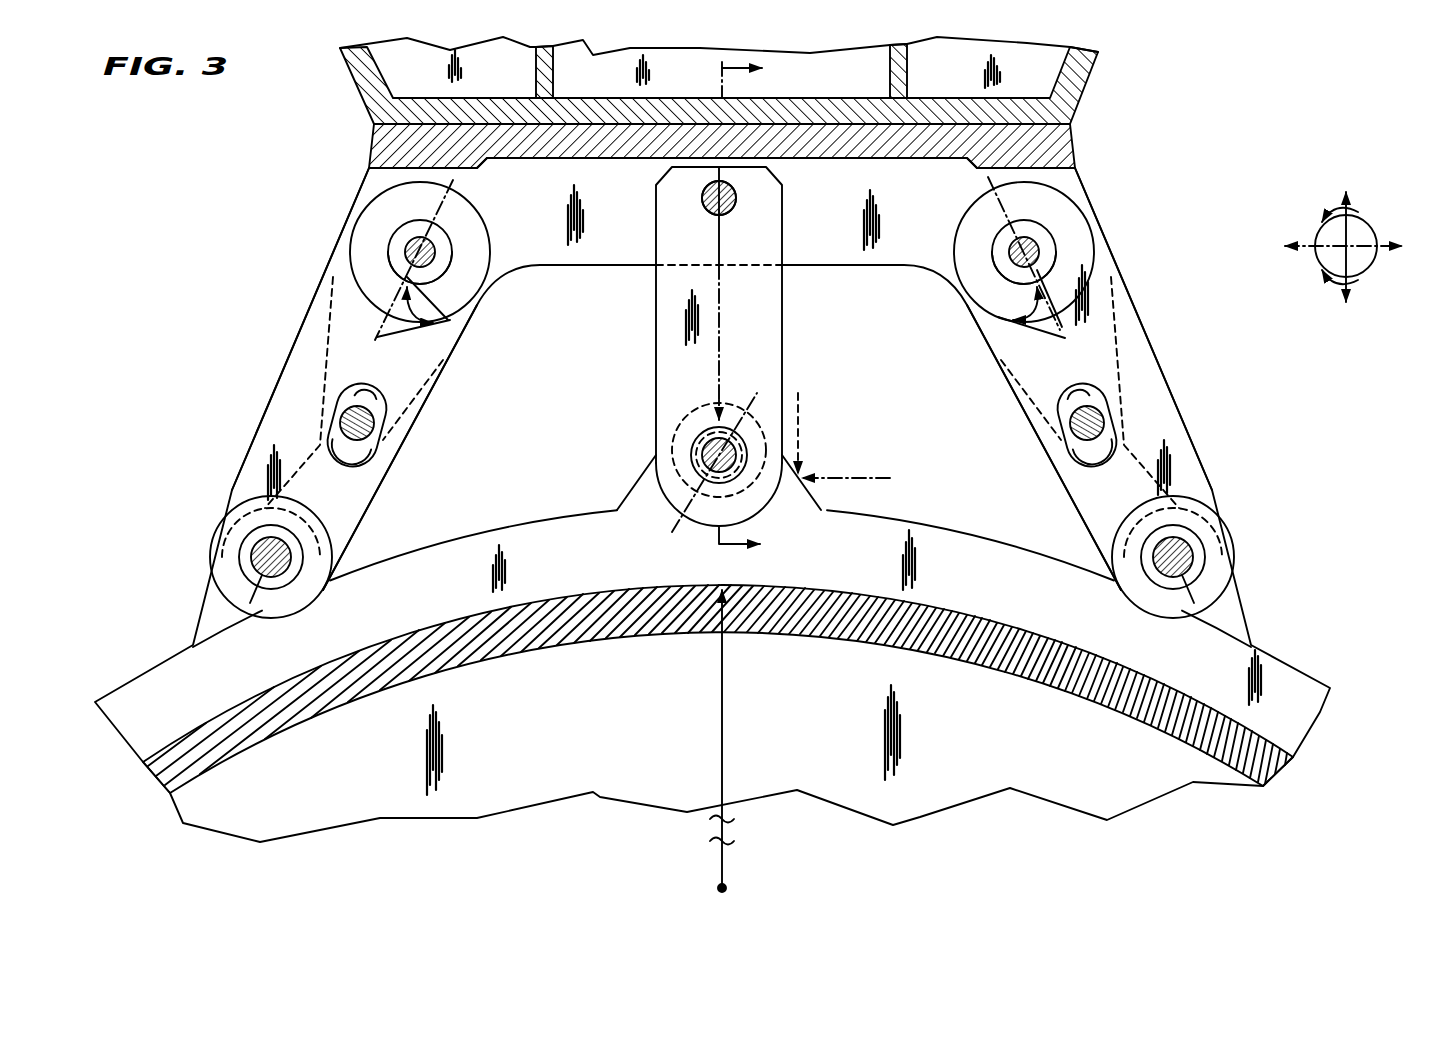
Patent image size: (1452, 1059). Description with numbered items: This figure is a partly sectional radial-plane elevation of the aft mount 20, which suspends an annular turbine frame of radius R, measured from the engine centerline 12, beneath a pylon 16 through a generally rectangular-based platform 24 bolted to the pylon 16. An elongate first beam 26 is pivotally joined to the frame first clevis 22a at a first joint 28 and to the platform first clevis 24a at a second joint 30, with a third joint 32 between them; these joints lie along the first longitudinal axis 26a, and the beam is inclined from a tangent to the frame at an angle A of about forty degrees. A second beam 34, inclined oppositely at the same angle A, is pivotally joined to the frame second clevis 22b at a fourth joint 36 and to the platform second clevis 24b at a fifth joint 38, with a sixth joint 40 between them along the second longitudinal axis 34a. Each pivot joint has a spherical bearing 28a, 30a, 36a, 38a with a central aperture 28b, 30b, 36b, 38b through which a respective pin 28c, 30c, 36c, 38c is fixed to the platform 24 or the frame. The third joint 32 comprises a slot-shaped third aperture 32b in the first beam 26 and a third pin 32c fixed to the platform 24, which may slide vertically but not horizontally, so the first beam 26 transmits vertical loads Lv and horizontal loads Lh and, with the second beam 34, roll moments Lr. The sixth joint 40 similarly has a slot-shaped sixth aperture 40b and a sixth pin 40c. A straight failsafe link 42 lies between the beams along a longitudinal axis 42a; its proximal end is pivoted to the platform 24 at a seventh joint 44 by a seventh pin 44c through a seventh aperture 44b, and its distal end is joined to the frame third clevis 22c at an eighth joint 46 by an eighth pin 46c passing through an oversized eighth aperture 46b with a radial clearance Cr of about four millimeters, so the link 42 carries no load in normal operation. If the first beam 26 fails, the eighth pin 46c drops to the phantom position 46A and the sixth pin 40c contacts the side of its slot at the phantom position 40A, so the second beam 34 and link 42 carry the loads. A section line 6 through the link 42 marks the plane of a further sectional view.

The engine centerline 12 is at (727, 890).
The pylon 16 is at (1085, 92).
The aft mount 20 is at (1168, 152).
The frame first clevis 22a is at (1241, 603).
The frame second clevis 22b is at (203, 603).
The frame third clevis 22c is at (620, 500).
The platform 24 is at (1082, 130).
The platform first clevis 24a is at (1085, 177).
The platform second clevis 24b is at (362, 172).
The first beam 26 is at (1156, 354).
The first longitudinal axis 26a is at (1126, 465).
The first joint 28 is at (1196, 567).
The spherical bearing 28a is at (1203, 546).
The central aperture 28b is at (1207, 522).
The first pin 28c is at (1113, 593).
The second joint 30 is at (1040, 233).
The spherical bearing 30a is at (1056, 236).
The central aperture 30b is at (1056, 252).
The second pin 30c is at (968, 247).
The third joint 32 is at (1108, 424).
The third aperture 32b is at (1062, 404).
The third pin 32c is at (1062, 424).
The second beam 34 is at (291, 363).
The second longitudinal axis 34a is at (318, 465).
The fourth joint 36 is at (250, 567).
The spherical bearing 36a is at (244, 546).
The central aperture 36b is at (238, 522).
The fourth pin 36c is at (332, 593).
The fifth joint 38 is at (407, 241).
The spherical bearing 38a is at (393, 236).
The central aperture 38b is at (388, 258).
The fifth pin 38c is at (487, 236).
The sixth joint 40 is at (338, 425).
The phantom position of sixth pin 40A is at (382, 388).
The sixth aperture 40b is at (361, 388).
The sixth pin 40c is at (377, 444).
The failsafe link 42 is at (655, 337).
The longitudinal axis of link 42a is at (721, 318).
The seventh joint 44 is at (694, 202).
The seventh aperture 44b is at (745, 203).
The seventh pin 44c is at (735, 192).
The eighth joint 46 is at (682, 460).
The phantom position of eighth pin 46A is at (703, 482).
The eighth aperture 46b is at (742, 437).
The eighth pin 46c is at (688, 485).
The section line 6 is at (753, 308).
The angle A is at (427, 307).
The radial clearance Cr is at (717, 404).
The vertical load Lv is at (800, 421).
The horizontal load Lh is at (840, 479).
The roll load Lr is at (1348, 205).
The radius R is at (722, 712).